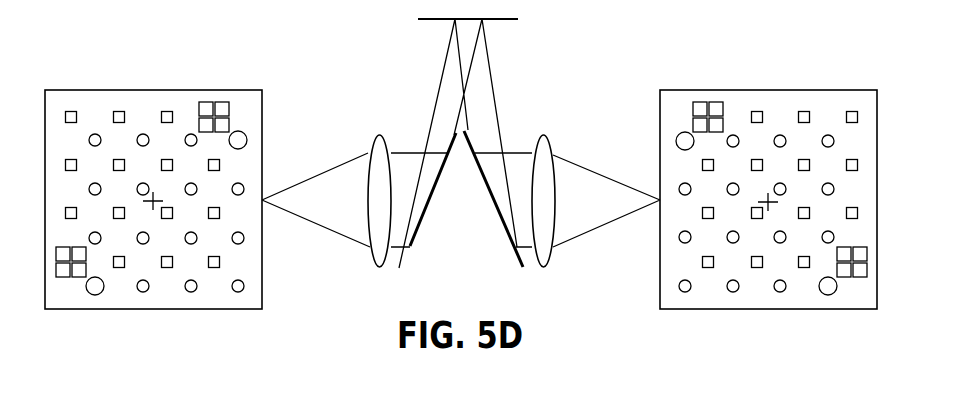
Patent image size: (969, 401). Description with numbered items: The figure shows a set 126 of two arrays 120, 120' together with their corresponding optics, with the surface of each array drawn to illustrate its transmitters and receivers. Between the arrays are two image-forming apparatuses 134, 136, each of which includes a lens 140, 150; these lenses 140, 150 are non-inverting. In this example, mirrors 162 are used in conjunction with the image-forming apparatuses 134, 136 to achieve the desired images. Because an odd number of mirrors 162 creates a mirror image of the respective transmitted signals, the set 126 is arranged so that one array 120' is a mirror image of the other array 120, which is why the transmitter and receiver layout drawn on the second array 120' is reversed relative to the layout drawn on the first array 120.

The set 126 is at (120, 51).
The array 120 is at (153, 172).
The array 120' is at (768, 172).
The image-forming apparatus 134 is at (379, 124).
The image-forming apparatus 136 is at (544, 123).
The lens 140 is at (380, 249).
The lens 150 is at (543, 250).
The mirrors 162 is at (505, 19).